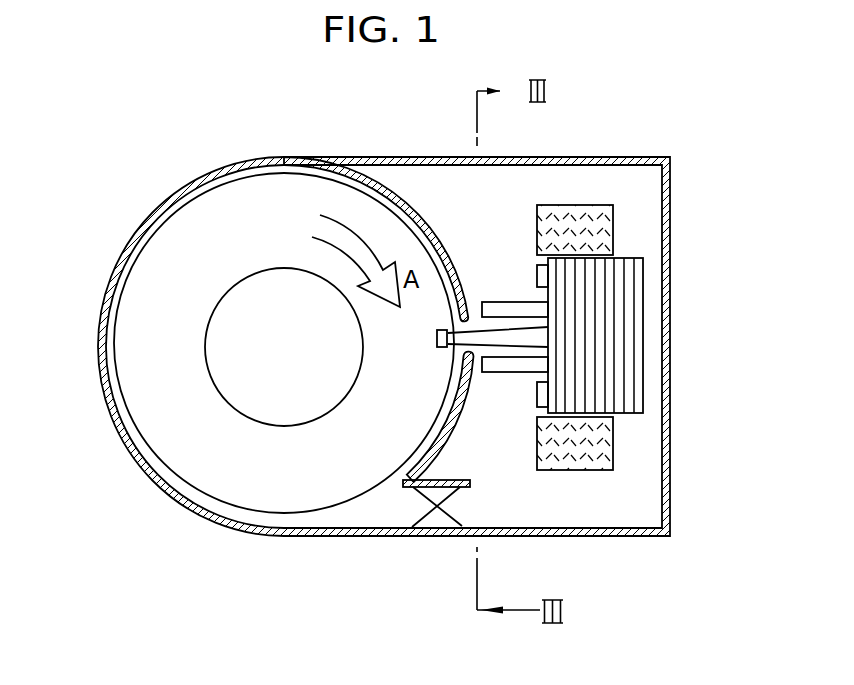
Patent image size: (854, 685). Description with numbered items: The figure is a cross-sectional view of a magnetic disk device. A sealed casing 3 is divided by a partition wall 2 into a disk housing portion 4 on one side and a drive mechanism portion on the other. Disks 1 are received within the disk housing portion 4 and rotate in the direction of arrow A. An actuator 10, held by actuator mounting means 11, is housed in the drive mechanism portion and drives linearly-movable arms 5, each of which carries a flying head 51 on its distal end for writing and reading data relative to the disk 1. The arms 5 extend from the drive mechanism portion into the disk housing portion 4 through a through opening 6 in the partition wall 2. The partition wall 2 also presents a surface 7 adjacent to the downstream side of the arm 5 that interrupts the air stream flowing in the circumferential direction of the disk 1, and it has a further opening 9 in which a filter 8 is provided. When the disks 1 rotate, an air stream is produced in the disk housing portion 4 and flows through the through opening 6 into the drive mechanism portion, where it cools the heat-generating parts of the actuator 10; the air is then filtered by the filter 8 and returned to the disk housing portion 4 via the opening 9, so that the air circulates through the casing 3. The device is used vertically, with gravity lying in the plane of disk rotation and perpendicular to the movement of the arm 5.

The disk 1 is at (207, 233).
The partition wall 2 is at (402, 197).
The casing 3 is at (238, 160).
The disk housing portion 4 is at (138, 243).
The arm 5 is at (595, 287).
The flying head 51 is at (437, 345).
The through opening 6 is at (377, 211).
The interrupting surface 7 is at (477, 367).
The filter 8 is at (452, 509).
The opening 9 is at (405, 512).
The actuator 10 is at (613, 228).
The actuator mounting means 11 is at (523, 366).